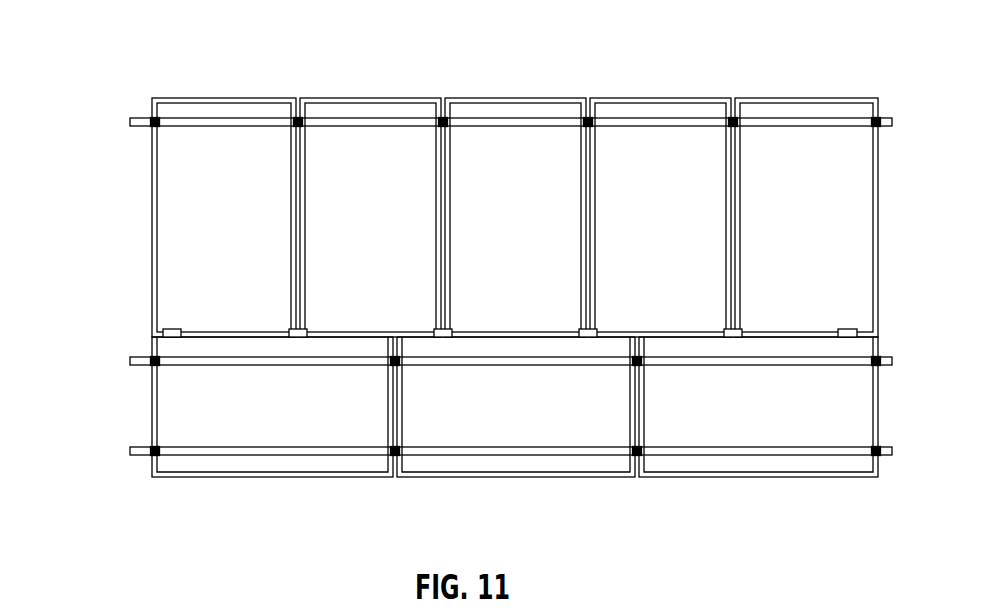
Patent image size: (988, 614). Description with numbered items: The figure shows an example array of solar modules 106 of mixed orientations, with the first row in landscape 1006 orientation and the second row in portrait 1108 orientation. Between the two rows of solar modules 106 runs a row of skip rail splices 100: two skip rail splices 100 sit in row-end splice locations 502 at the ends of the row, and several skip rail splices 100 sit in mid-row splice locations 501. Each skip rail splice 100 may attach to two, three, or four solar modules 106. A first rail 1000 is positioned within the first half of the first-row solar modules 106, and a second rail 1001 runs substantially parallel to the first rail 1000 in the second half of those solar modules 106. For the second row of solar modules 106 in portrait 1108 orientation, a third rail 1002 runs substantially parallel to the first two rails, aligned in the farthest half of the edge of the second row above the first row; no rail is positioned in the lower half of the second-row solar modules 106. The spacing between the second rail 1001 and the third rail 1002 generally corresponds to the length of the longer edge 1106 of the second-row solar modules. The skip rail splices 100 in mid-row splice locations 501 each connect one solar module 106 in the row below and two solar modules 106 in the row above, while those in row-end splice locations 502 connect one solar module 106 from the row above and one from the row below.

The solar module 106 is at (469, 256).
The portrait orientation 1108 is at (448, 217).
The longer edge 1106 is at (88, 335).
The landscape orientation 1006 is at (449, 408).
The third rail 1002 is at (887, 118).
The second rail 1001 is at (888, 356).
The first rail 1000 is at (890, 457).
The mid-row splice location 501 is at (448, 328).
The row-end splice location 502 is at (170, 329).
The skip rail splice 100 is at (297, 338).